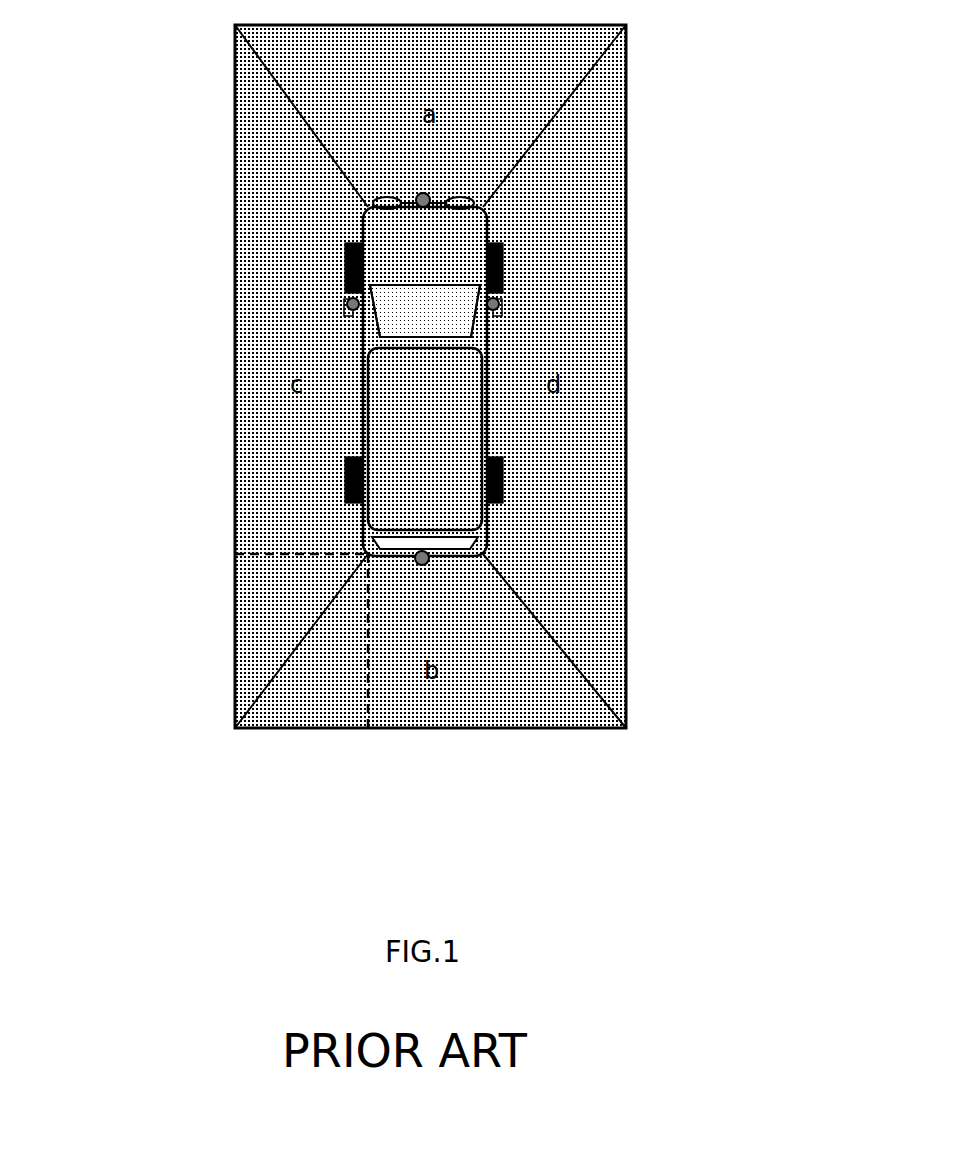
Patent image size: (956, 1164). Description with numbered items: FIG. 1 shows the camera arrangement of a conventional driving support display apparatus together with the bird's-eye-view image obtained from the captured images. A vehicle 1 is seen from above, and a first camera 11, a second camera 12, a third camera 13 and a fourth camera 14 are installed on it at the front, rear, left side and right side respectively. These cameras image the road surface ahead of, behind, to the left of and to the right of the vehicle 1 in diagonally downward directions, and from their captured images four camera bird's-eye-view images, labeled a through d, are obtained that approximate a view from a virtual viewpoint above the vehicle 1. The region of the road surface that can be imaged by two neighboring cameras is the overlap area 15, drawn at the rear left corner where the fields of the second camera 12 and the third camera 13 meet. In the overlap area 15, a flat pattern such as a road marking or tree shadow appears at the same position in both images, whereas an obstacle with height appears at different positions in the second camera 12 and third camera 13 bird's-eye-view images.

The vehicle 1 is at (478, 228).
The first camera 11 is at (417, 195).
The second camera 12 is at (429, 567).
The third camera 13 is at (346, 300).
The fourth camera 14 is at (502, 300).
The overlap area 15 is at (298, 693).